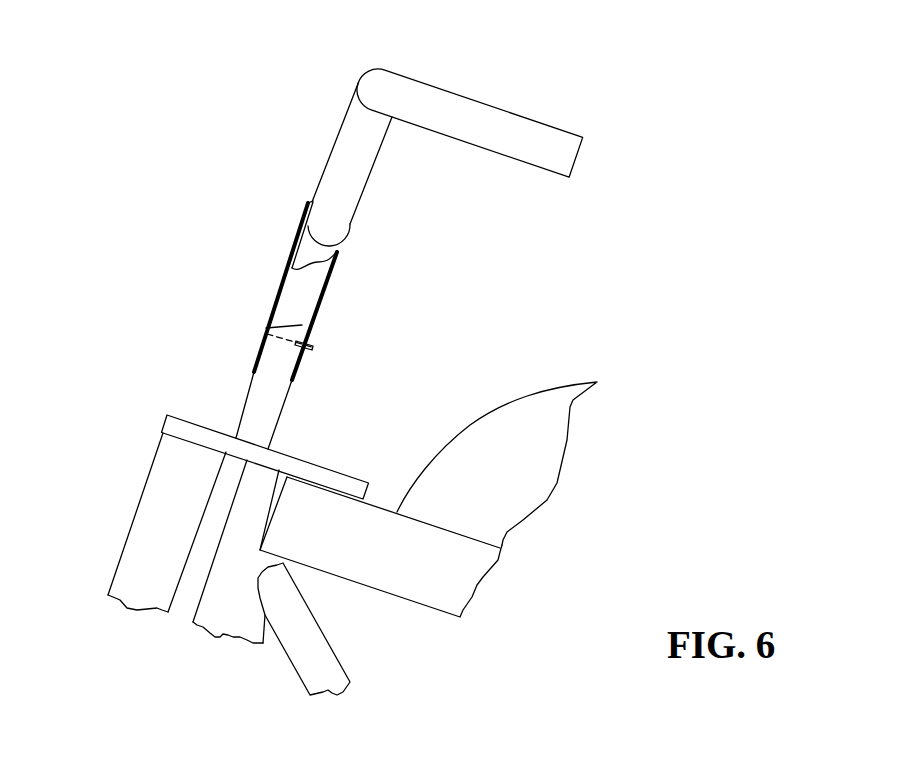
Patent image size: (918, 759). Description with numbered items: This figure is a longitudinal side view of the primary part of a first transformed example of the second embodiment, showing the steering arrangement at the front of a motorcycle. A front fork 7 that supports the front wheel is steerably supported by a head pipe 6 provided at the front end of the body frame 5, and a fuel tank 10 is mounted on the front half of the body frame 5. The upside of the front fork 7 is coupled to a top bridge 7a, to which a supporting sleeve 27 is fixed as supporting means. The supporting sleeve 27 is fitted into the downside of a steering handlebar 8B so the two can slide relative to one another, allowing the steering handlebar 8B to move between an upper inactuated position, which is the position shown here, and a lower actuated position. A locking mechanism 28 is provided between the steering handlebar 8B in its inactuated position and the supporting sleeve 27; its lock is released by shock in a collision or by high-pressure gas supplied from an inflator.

The steering handlebar 8B is at (507, 127).
The locking mechanism 28 is at (263, 331).
The supporting sleeve 27 is at (255, 402).
The top bridge 7a is at (184, 432).
The front fork 7 is at (128, 497).
The head pipe 6 is at (223, 628).
The body frame 5 is at (365, 562).
The fuel tank 10 is at (514, 403).